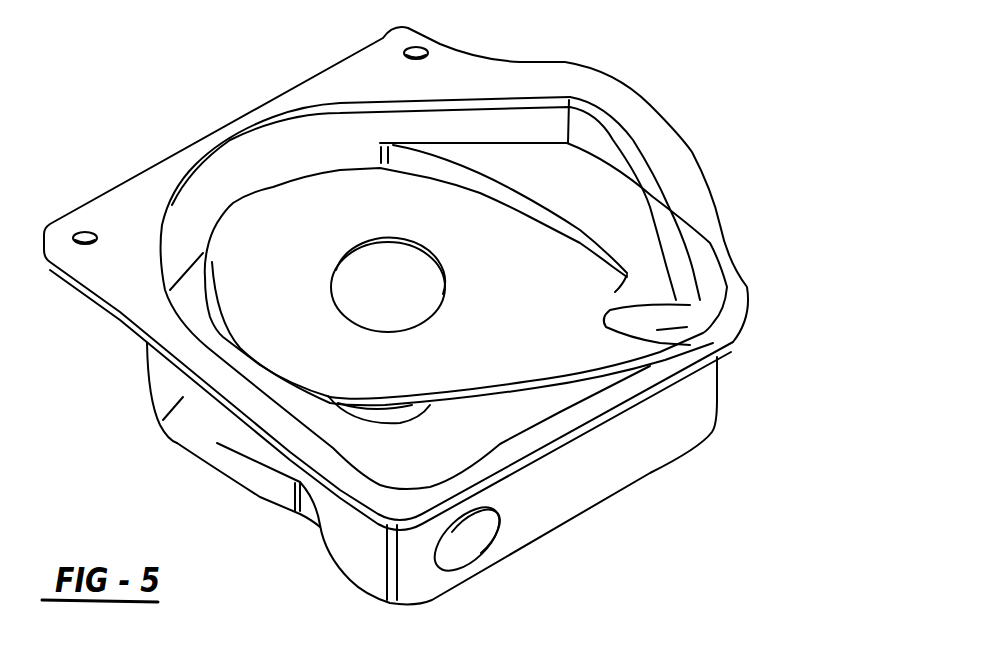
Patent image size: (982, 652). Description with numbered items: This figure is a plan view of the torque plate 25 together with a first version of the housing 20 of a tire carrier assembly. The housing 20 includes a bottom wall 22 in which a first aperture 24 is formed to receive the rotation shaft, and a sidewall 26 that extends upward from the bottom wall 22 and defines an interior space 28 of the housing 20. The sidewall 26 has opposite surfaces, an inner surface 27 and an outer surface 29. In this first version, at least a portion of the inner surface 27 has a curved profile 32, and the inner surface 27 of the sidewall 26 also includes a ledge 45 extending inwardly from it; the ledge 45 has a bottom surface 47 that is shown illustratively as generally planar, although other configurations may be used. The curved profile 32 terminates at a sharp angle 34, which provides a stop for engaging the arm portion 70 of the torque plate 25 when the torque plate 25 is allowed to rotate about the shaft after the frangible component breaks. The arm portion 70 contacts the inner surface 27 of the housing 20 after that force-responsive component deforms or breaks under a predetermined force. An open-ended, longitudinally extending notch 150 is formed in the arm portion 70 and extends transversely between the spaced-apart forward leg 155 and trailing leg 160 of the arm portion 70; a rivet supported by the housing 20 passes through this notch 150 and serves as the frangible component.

The housing 20 is at (688, 145).
The bottom wall 22 is at (513, 427).
The first aperture 24 is at (397, 423).
The torque plate 25 is at (325, 197).
The sidewall 26 is at (160, 420).
The inner surface 27 is at (253, 153).
The interior space 28 is at (203, 207).
The outer surface 29 is at (190, 436).
The curved profile 32 is at (652, 198).
The sharp angle 34 is at (583, 187).
The ledge 45 is at (473, 183).
The bottom surface 47 is at (635, 82).
The arm portion 70 is at (620, 290).
The notch 150 is at (740, 333).
The forward leg 155 is at (693, 278).
The trailing leg 160 is at (650, 367).